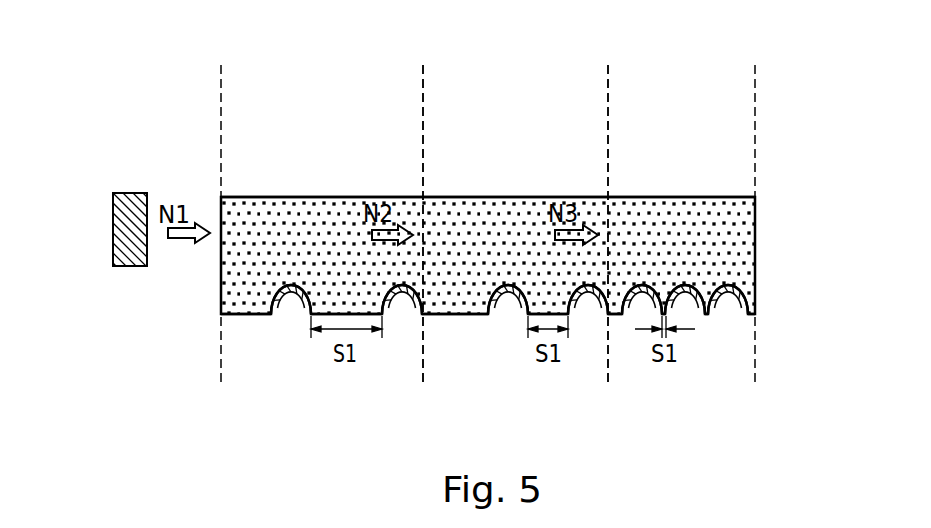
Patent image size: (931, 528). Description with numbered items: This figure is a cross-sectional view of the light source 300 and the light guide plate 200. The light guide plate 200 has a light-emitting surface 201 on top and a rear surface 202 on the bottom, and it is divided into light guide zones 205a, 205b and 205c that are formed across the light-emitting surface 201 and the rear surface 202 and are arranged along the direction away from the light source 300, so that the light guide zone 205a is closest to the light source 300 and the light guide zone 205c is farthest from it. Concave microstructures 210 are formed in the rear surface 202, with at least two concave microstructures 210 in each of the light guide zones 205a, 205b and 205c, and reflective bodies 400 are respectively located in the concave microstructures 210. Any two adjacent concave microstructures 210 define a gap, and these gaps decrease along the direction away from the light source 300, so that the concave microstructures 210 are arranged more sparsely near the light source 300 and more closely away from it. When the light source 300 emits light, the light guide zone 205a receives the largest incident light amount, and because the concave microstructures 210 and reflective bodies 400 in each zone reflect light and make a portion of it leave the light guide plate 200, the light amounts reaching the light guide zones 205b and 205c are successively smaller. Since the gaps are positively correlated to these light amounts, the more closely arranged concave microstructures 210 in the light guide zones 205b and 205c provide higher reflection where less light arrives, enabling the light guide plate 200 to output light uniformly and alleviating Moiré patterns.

The light guide plate 200 is at (745, 240).
The light-emitting surface 201 is at (241, 197).
The rear surface 202 is at (240, 315).
The light guide zone 205a is at (323, 140).
The light guide zone 205b is at (506, 140).
The light guide zone 205c is at (675, 140).
The concave microstructure 210 is at (280, 317).
The light source 300 is at (122, 229).
The reflective body 400 is at (292, 288).